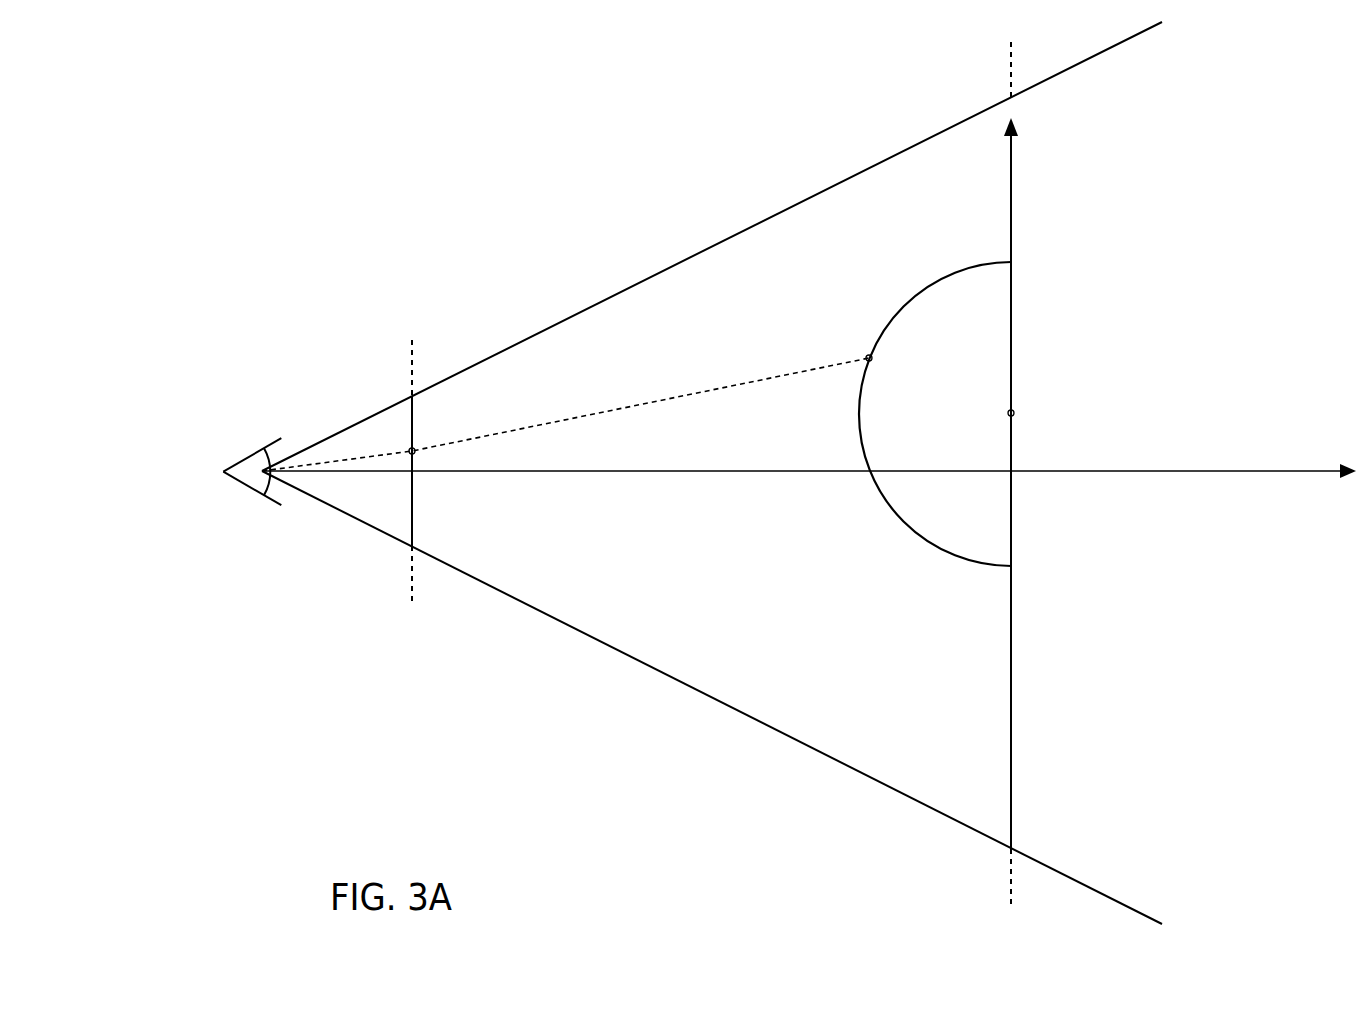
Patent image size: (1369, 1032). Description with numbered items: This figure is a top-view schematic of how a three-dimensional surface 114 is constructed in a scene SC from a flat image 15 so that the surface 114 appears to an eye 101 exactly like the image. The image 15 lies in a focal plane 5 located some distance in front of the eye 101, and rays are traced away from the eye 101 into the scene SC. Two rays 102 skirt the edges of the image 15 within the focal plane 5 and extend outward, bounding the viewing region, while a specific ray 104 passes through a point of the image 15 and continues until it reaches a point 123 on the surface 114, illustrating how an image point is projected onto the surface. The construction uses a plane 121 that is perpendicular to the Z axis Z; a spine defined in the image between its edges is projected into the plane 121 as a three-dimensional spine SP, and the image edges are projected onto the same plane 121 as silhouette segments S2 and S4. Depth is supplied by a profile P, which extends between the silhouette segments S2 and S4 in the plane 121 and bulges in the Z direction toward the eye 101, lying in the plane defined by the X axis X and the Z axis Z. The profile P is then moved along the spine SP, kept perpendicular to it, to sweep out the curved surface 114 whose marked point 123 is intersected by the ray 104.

The eye 101 is at (242, 455).
The rays 102 is at (1147, 32).
The focal plane 5 is at (413, 356).
The image 15 is at (410, 427).
The ray 104 is at (583, 423).
The spherical surface 114 is at (864, 458).
The point on surface 123 is at (869, 358).
The plane 121 is at (1012, 315).
The 3-D spine SP is at (1016, 414).
The silhouette segment S2 is at (1011, 264).
The silhouette segment S4 is at (1011, 566).
The 3-D profile P is at (888, 504).
The scene SC is at (851, 832).
The X axis X is at (1025, 140).
The Z axis Z is at (809, 454).